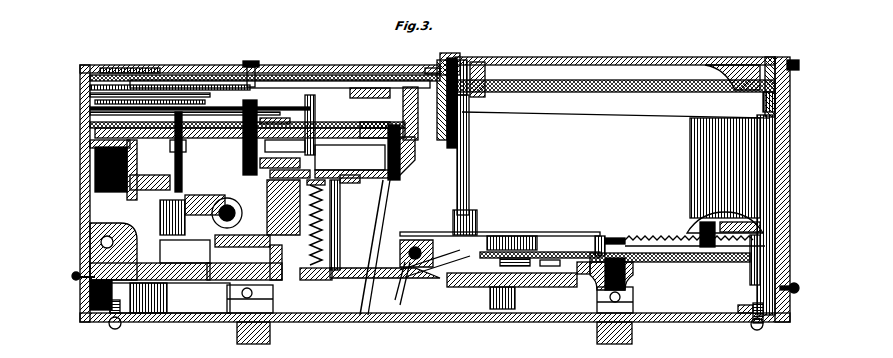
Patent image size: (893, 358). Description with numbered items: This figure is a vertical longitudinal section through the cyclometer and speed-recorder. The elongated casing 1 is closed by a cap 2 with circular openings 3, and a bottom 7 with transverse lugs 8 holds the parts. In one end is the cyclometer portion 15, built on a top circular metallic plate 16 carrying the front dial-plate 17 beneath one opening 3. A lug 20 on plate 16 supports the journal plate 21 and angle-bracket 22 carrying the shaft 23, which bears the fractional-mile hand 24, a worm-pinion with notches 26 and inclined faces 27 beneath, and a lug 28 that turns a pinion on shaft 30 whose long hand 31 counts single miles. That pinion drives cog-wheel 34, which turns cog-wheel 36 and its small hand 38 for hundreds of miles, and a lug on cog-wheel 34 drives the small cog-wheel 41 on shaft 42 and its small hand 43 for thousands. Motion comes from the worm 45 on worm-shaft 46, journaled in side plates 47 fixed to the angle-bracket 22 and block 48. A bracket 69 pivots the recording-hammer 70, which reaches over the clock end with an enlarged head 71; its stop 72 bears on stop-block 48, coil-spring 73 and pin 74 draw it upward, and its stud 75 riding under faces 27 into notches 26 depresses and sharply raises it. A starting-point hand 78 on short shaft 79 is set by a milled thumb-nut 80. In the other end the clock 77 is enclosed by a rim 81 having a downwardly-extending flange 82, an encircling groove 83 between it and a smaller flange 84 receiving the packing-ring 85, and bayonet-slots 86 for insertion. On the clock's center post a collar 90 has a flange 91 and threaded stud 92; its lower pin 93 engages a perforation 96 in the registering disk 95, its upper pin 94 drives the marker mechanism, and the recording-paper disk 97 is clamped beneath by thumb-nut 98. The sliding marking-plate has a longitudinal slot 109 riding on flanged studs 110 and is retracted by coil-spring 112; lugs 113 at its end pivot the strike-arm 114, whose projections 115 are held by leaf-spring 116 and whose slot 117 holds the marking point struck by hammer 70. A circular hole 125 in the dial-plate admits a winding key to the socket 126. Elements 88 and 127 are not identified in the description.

The elongated casing 1 is at (790, 130).
The top plate or cap 2 is at (430, 70).
The circular openings 3 is at (360, 72).
The bottom 7 is at (272, 333).
The transverse lugs 8 is at (633, 333).
The cyclometer portion 15 is at (90, 165).
The top circular metallic plate 16 is at (95, 132).
The front dial-plate 17 is at (368, 120).
The lug 20 is at (410, 160).
The horizontal supporting and journal plate 21 is at (370, 185).
The angular plate or bracket 22 is at (312, 245).
The shaft 23 is at (215, 205).
The indicating-hand 24 is at (90, 100).
The notches 26 is at (150, 184).
The inclined faces 27 is at (184, 210).
The longitudinally-disposed lug or projection 28 is at (345, 200).
The shaft 30 is at (257, 116).
The long indicating-hand 31 is at (82, 82).
The cog-wheel 34 is at (290, 122).
The cog-wheel 36 is at (310, 140).
The small indicating-hand 38 is at (185, 112).
The small cog-wheel 41 is at (330, 161).
The shaft 42 is at (352, 112).
The small hand 43 is at (312, 110).
The worm 45 is at (252, 205).
The worm-shaft 46 is at (235, 245).
The side plates 47 is at (205, 245).
The block 48 is at (283, 207).
The bracket 69 is at (90, 230).
The recording-hammer 70 is at (190, 290).
The enlarged head 71 is at (465, 287).
The upwardly-turned stop 72 is at (295, 270).
The coil-spring 73 is at (380, 235).
The pin 74 is at (385, 200).
The upwardly-extending stud 75 is at (95, 255).
The clock 77 is at (616, 165).
The hand 78 is at (150, 78).
The short shaft 79 is at (290, 75).
The milled thumb-nut 80 is at (258, 62).
The rim 81 is at (775, 60).
The downwardly-extending flange 82 is at (790, 87).
The encircling groove 83 is at (800, 66).
The smaller encircling flange 84 is at (440, 62).
The packing-ring 85 is at (460, 60).
The bayonet-slots 86 is at (478, 118).
The corner piece 88 is at (765, 100).
The collar 90 is at (633, 270).
The flange 91 is at (600, 252).
The screw-threaded stud 92 is at (633, 295).
The downwardly-extending pin 93 is at (680, 262).
The upwardly-extending pin 94 is at (650, 228).
The circular registering disk 95 is at (740, 265).
The small perforation 96 is at (590, 280).
The graduated recording-paper disk 97 is at (450, 265).
The thumb-nut 98 is at (597, 328).
The longitudinal slot 109 is at (545, 238).
The flanged rivets or studs 110 is at (510, 236).
The coil-spring 112 is at (800, 270).
The perforated lugs 113 is at (430, 240).
The strike-arm 114 is at (458, 300).
The lateral upwardly-extending projections 115 is at (395, 286).
The leaf-spring 116 is at (435, 259).
The short longitudinally-disposed slot 117 is at (534, 263).
The circular hole 125 is at (740, 300).
The socket 126 is at (725, 229).
The post 127 is at (509, 298).